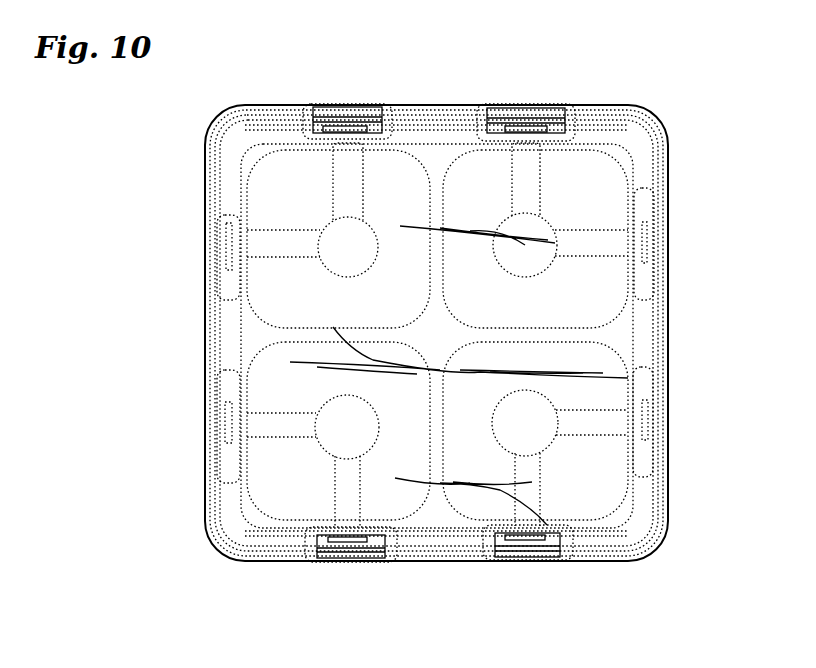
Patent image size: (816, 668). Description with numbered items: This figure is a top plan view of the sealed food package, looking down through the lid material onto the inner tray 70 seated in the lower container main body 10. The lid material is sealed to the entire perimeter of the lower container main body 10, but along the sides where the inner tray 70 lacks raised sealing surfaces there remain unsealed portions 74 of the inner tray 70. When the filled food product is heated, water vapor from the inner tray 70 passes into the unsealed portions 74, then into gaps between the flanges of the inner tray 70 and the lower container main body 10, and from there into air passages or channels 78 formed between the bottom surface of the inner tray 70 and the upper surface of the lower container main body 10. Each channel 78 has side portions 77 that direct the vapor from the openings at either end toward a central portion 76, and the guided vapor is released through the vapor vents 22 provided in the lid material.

The lower container main body 10 is at (519, 106).
The vapor vent 22 is at (355, 108).
The inner tray 70 is at (610, 138).
The unsealed portions 74 is at (643, 382).
The central portion 76 is at (338, 257).
The side portions 77 is at (275, 243).
The channels 78 is at (349, 278).